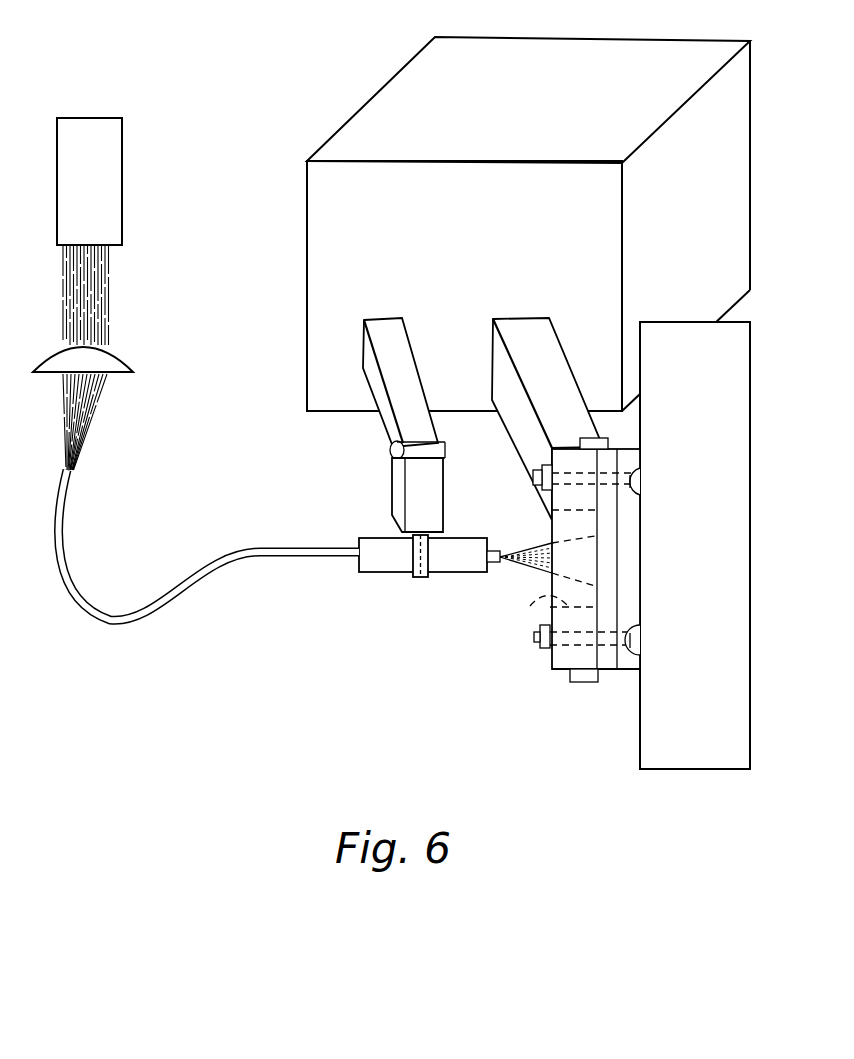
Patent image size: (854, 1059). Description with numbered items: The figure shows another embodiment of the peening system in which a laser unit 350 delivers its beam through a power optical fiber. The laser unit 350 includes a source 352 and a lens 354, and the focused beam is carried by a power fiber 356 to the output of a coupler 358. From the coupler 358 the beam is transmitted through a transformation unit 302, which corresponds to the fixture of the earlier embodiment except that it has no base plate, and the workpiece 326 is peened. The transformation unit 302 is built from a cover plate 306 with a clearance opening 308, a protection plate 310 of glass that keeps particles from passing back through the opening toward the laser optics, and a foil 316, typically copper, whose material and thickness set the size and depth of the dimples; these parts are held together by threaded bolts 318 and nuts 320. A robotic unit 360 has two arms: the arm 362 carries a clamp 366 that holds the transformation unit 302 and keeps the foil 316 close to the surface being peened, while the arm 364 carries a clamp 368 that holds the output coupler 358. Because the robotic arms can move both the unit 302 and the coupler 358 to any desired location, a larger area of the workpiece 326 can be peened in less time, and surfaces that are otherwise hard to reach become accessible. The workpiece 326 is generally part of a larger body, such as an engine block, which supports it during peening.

The transformation unit 302 is at (554, 597).
The cover plate 306 is at (567, 680).
The clearance opening 308 is at (535, 606).
The protection plate 310 is at (604, 668).
The foil 316 is at (630, 668).
The threaded bolts 318 is at (645, 483).
The nuts 320 is at (540, 484).
The workpiece 326 is at (736, 409).
The laser unit 350 is at (132, 286).
The source 352 is at (105, 205).
The lens 354 is at (118, 368).
The power fiber 356 is at (148, 616).
The coupler 358 is at (383, 560).
The robotic unit 360 is at (735, 155).
The arm 362 is at (548, 333).
The arm 364 is at (398, 343).
The clamp 366 is at (600, 448).
The clamp 368 is at (422, 582).